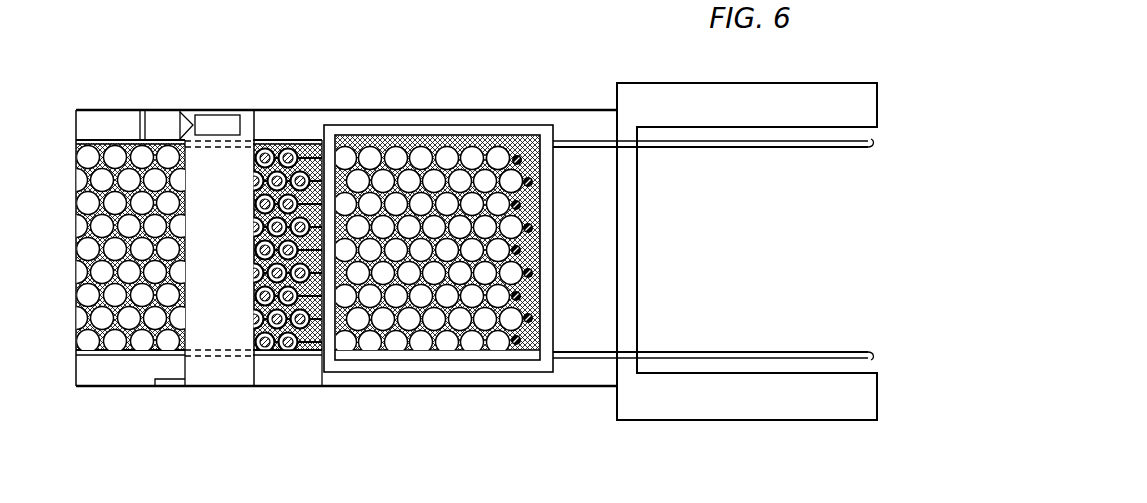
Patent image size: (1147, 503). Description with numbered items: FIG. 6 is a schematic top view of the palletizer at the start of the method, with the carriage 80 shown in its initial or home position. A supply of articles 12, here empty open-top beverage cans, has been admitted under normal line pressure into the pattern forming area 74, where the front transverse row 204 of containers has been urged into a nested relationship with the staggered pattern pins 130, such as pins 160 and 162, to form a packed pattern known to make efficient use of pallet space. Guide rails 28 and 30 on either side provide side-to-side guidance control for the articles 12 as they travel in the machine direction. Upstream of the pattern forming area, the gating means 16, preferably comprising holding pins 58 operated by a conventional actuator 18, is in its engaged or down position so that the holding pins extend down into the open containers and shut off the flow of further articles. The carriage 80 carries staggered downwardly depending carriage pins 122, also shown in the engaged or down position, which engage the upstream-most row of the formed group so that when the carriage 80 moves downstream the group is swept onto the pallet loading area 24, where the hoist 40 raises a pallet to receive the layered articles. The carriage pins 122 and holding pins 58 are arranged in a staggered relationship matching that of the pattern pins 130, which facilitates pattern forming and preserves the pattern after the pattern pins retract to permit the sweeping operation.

The articles 12 is at (125, 223).
The gating means 16 is at (203, 239).
The actuator 18 is at (161, 115).
The pallet loading area 24 is at (702, 262).
The guide rail 28 is at (572, 126).
The guide rail 30 is at (300, 370).
The hoist 40 is at (750, 404).
The holding pins 58 is at (250, 340).
The pattern forming area 74 is at (405, 302).
The carriage 80 is at (424, 130).
The carriage pins 122 is at (302, 178).
The pattern pins 130 is at (528, 197).
The pin 160 is at (516, 346).
The pin 162 is at (534, 318).
The front transverse row 204 is at (510, 178).